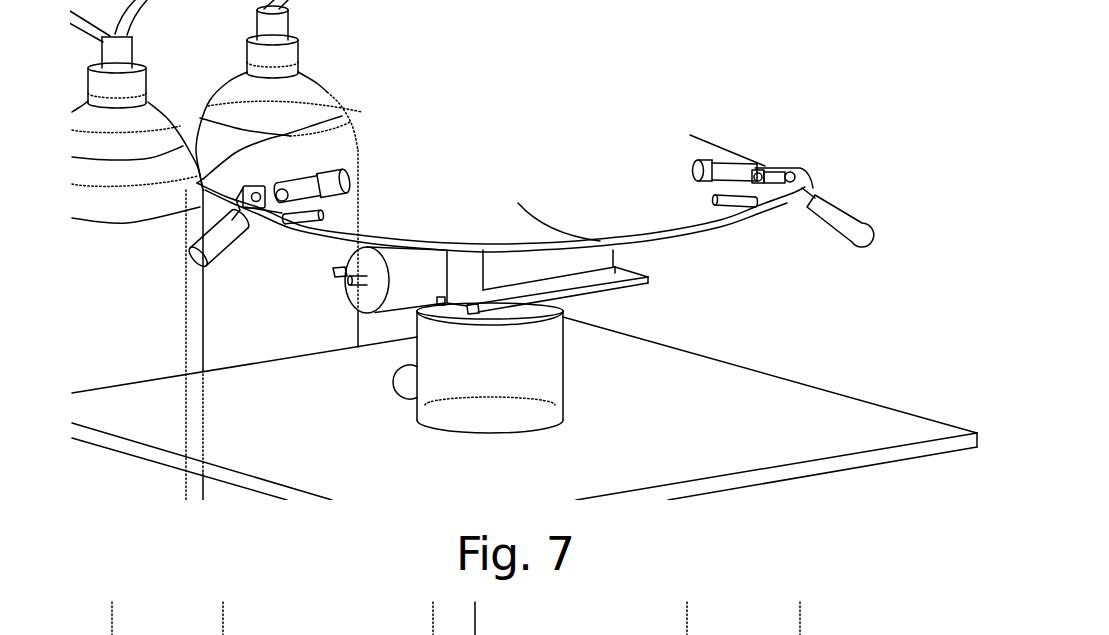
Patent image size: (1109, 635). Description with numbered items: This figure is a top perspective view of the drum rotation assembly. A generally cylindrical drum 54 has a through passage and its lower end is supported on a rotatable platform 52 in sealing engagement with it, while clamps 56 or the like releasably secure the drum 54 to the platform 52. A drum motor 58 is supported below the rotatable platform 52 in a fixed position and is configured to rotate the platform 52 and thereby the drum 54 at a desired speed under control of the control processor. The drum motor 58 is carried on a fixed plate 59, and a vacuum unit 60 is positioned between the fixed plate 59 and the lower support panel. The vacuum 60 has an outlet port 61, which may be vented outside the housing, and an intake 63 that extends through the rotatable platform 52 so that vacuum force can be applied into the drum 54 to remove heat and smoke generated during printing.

The rotatable platform 52 is at (695, 217).
The drum 54 is at (688, 70).
The clamps 56 is at (288, 204).
The drum motor 58 is at (372, 294).
The fixed plate 59 is at (590, 290).
The vacuum unit 60 is at (527, 364).
The outlet port 61 is at (403, 384).
The intake 63 is at (638, 236).